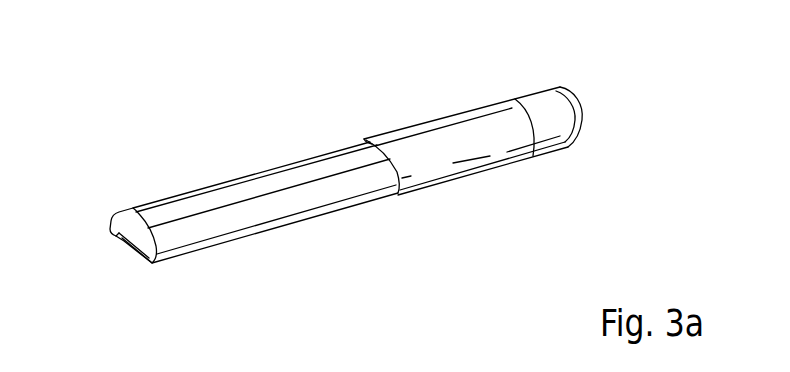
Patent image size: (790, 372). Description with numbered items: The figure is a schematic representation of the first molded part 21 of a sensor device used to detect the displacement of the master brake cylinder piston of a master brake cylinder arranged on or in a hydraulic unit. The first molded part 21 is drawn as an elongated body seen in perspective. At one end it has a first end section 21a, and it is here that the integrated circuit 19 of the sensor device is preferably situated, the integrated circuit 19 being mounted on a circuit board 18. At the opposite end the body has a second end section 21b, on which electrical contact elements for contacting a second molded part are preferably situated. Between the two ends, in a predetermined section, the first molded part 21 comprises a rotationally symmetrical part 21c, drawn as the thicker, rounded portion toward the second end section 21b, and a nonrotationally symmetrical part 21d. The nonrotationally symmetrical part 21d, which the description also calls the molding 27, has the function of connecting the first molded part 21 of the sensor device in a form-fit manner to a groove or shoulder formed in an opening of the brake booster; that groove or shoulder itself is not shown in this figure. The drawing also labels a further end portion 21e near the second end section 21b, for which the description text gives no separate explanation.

The circuit board 18 is at (114, 238).
The integrated circuit 19 is at (129, 259).
The first molded part 21 is at (347, 127).
The first end section 21a is at (147, 266).
The second end section 21b is at (582, 138).
The rotationally symmetrical part 21c is at (462, 127).
The nonrotationally symmetrical part 21d is at (267, 187).
The end portion 21e is at (542, 100).
The molding 27 is at (277, 216).